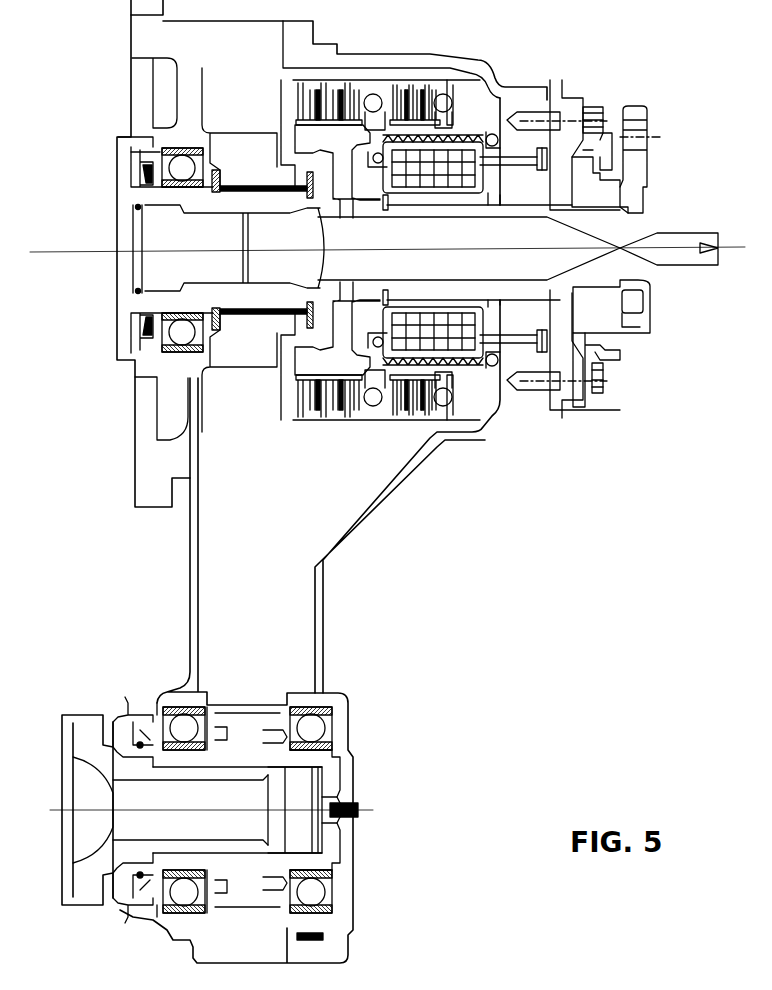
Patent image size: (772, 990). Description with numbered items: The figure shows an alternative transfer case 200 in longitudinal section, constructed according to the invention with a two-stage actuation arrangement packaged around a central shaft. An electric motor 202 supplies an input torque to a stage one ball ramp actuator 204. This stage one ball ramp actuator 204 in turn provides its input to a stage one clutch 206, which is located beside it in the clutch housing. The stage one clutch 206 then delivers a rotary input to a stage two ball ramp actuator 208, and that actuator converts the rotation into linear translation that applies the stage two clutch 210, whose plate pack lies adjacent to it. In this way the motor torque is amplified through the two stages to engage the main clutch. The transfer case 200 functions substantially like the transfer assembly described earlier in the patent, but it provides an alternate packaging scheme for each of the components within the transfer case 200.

The transfer case 200 is at (527, 553).
The electric motor 202 is at (508, 362).
The stage 1 ball ramp actuator 204 is at (457, 421).
The stage 1 clutch 206 is at (422, 428).
The stage 2 ball ramp actuator 208 is at (377, 422).
The stage 2 clutch 210 is at (313, 424).